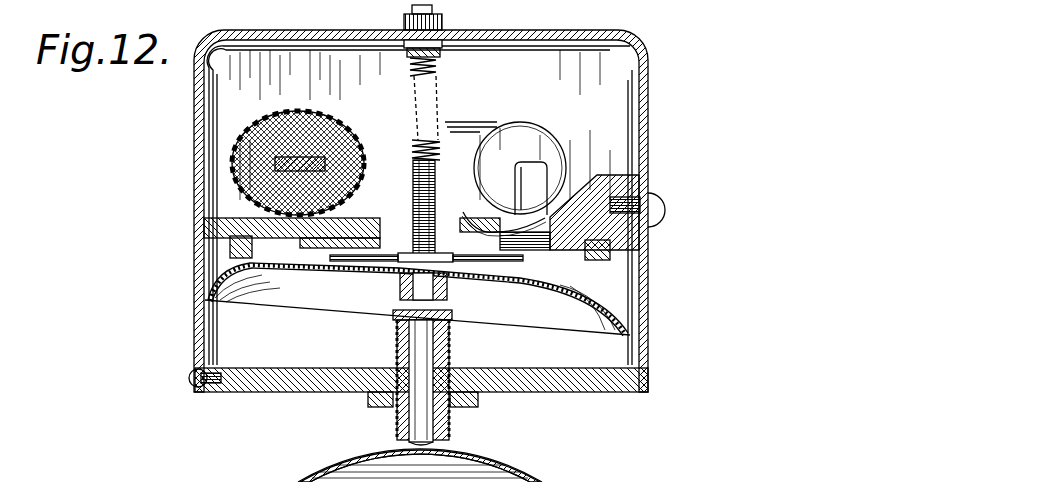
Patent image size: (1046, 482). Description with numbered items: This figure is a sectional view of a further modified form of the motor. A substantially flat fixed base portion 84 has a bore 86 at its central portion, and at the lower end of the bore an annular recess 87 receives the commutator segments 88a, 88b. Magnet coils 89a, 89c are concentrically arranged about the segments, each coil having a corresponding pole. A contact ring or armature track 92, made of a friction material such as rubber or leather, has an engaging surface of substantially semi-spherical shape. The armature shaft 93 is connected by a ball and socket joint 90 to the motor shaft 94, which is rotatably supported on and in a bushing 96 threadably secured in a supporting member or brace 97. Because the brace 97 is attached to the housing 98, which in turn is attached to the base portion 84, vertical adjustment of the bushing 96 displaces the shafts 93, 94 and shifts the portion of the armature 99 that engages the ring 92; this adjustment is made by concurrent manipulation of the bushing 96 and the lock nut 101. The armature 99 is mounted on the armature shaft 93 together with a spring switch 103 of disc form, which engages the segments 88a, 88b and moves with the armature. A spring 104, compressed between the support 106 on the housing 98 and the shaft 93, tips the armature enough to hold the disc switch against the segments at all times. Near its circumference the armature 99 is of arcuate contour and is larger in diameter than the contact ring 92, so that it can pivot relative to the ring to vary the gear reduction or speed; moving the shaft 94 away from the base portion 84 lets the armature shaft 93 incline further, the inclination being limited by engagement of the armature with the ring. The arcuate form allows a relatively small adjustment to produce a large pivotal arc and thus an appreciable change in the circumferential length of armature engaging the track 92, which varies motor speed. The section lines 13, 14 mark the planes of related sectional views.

The section line 13 is at (137, 262).
The section line 14 is at (215, 255).
The fixed base portion 84 is at (197, 197).
The bore 86 is at (460, 213).
The annular recess 87 is at (390, 217).
The commutator segment 88a is at (524, 242).
The commutator segment 88b is at (320, 248).
The magnet coil 89a is at (338, 132).
The magnet coil 89c is at (545, 135).
The ball and socket joint 90 is at (400, 292).
The contact ring or armature track 92 is at (650, 255).
The armature shaft 93 is at (445, 285).
The motor shaft 94 is at (420, 362).
The bushing 96 is at (398, 416).
The supporting member or brace 97 is at (612, 395).
The housing 98 is at (652, 122).
The armature 99 is at (628, 323).
The lock nut 101 is at (478, 400).
The spring switch 103 is at (365, 245).
The spring 104 is at (465, 109).
The support 106 is at (440, 47).